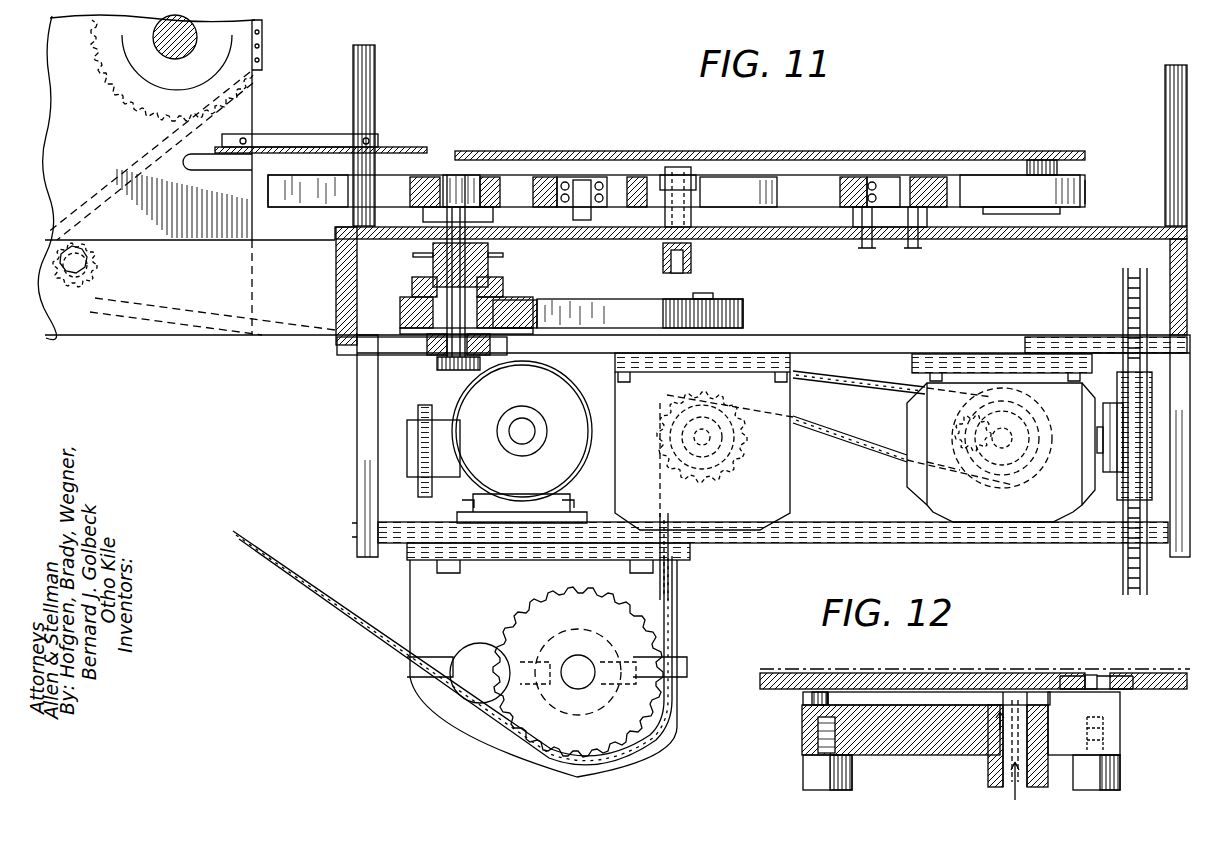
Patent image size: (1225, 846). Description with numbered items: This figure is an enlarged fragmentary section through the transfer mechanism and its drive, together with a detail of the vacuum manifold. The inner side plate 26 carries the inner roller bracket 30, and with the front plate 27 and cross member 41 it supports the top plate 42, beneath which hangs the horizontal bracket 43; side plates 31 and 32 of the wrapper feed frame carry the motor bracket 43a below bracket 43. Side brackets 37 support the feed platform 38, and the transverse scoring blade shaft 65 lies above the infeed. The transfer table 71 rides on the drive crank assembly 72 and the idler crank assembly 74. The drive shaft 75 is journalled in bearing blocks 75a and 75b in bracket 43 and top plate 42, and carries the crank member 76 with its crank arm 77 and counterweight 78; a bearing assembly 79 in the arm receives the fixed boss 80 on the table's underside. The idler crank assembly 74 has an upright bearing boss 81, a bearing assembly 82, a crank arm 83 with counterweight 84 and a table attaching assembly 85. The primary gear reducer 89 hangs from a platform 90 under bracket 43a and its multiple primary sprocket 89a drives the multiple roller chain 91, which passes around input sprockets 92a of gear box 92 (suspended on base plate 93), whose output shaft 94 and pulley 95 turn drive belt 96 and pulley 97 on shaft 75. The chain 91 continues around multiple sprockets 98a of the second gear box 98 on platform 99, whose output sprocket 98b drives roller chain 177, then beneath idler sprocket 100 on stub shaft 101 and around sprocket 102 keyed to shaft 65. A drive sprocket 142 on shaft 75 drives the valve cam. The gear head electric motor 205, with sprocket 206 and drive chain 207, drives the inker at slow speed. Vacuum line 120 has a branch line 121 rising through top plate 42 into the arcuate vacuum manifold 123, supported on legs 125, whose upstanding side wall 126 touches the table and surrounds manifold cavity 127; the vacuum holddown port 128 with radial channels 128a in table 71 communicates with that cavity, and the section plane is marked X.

In FIG. 11, the inner side plate 26 is at (275, 246).
In FIG. 11, the front plate 27 is at (1170, 252).
In FIG. 11, the inner roller bracket 30 is at (252, 112).
In FIG. 11, the side plate 31 is at (1165, 78).
In FIG. 11, the side plate 32 is at (375, 70).
In FIG. 11, the side brackets 37 is at (290, 136).
In FIG. 11, the feed platform 38 is at (397, 145).
In FIG. 11, the cross member 41 is at (336, 268).
In FIG. 11, the top plate 42 is at (828, 240).
In FIG. 11, the horizontal bracket 43 is at (870, 340).
In FIG. 11, the motor bracket 43a is at (840, 543).
In FIG. 11, the transverse scoring blade shaft 65 is at (172, 68).
In FIG. 11, the transfer table 71 is at (805, 152).
In FIG. 12, the transfer table 71 is at (940, 682).
In FIG. 11, the drive crank assembly 72 is at (386, 181).
In FIG. 11, the idler crank assembly 74 is at (1090, 190).
In FIG. 11, the drive shaft 75 is at (488, 282).
In FIG. 11, the bearing block 75a is at (437, 360).
In FIG. 11, the bearing block 75b is at (493, 220).
In FIG. 11, the crank member 76 is at (460, 175).
In FIG. 11, the crank arm 77 is at (540, 177).
In FIG. 11, the counterweight 78 is at (296, 182).
In FIG. 11, the bearing assembly 79 is at (637, 177).
In FIG. 11, the fixed boss 80 is at (583, 178).
In FIG. 11, the bearing boss 81 is at (875, 177).
In FIG. 11, the bearing assembly 82 is at (920, 177).
In FIG. 11, the crank arm 83 is at (975, 175).
In FIG. 11, the counterweight 84 is at (748, 177).
In FIG. 11, the table attaching assembly 85 is at (1060, 166).
In FIG. 11, the primary gear reducer 89 is at (680, 600).
In FIG. 11, the multiple primary sprocket 89a is at (530, 620).
In FIG. 11, the platform 90 is at (680, 552).
In FIG. 11, the multiple roller chain 91 is at (140, 162).
In FIG. 11, the gear box 92 is at (790, 403).
In FIG. 11, the input sprockets 92a is at (720, 470).
In FIG. 11, the base plate 93 is at (775, 358).
In FIG. 11, the output shaft 94 is at (705, 299).
In FIG. 11, the pulley 95 is at (713, 296).
In FIG. 11, the drive belt 96 is at (600, 298).
In FIG. 11, the pulley 97 is at (530, 300).
In FIG. 11, the second gear box 98 is at (932, 500).
In FIG. 11, the multiple sprockets 98a is at (955, 428).
In FIG. 11, the output sprocket 98b is at (1120, 490).
In FIG. 11, the platform 99 is at (960, 355).
In FIG. 11, the idler sprocket 100 is at (120, 260).
In FIG. 11, the stub shaft 101 is at (100, 280).
In FIG. 11, the sprocket 102 is at (264, 30).
In FIG. 11, the vacuum line 120 is at (691, 258).
In FIG. 11, the branch line 121 is at (666, 215).
In FIG. 12, the branch line 121 is at (988, 770).
In FIG. 11, the vacuum manifold 123 is at (678, 190).
In FIG. 12, the vacuum manifold 123 is at (802, 727).
In FIG. 12, the legs 125 is at (803, 770).
In FIG. 12, the upstanding side wall 126 is at (803, 698).
In FIG. 12, the manifold cavity 127 is at (845, 698).
In FIG. 12, the vacuum holddown port 128 is at (1092, 675).
In FIG. 12, the radial channels 128a is at (1075, 676).
In FIG. 11, the drive sprocket 142 is at (503, 256).
In FIG. 11, the roller chain 177 is at (1148, 578).
In FIG. 11, the gear head electric motor 205 is at (542, 396).
In FIG. 11, the sprocket 206 is at (407, 432).
In FIG. 11, the drive chain 207 is at (420, 456).
In FIG. 12, the center line X is at (792, 668).